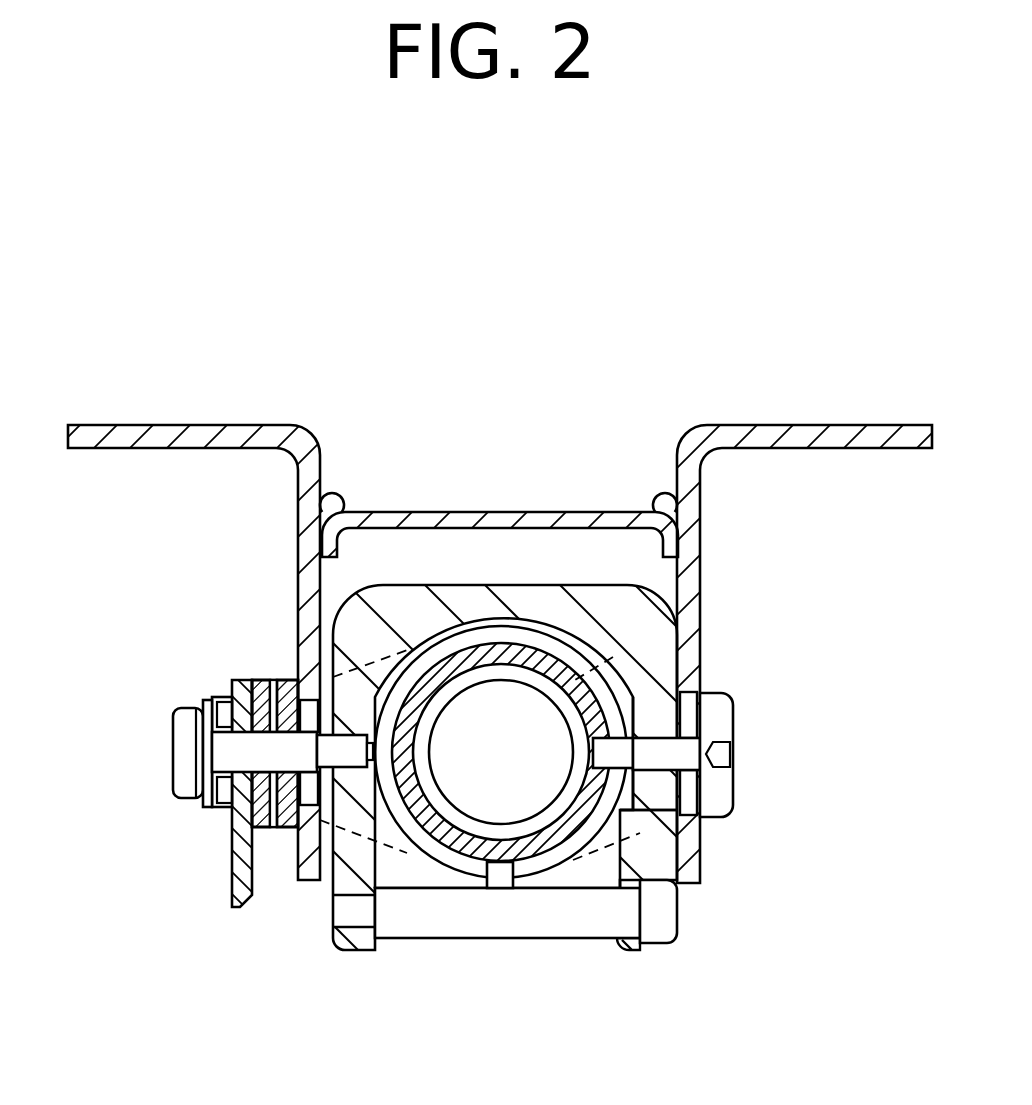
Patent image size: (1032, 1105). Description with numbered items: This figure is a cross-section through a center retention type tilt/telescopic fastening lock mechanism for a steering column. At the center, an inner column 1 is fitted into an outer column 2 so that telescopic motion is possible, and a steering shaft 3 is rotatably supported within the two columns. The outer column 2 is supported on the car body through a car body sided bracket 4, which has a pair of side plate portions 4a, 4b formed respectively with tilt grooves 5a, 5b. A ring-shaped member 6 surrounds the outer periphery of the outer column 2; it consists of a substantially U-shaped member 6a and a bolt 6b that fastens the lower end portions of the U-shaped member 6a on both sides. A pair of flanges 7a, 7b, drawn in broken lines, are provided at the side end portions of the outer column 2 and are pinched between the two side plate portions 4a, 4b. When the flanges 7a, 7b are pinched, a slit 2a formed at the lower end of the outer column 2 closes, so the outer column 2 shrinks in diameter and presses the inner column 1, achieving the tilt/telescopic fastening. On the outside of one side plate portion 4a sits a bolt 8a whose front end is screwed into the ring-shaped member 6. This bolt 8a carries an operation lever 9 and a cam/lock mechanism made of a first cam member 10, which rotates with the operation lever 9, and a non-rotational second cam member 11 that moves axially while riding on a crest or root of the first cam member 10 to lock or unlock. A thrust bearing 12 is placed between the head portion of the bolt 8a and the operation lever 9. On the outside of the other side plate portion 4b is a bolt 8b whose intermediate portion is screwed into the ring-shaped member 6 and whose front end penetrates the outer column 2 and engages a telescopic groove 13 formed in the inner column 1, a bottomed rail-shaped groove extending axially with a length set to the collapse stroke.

The inner column 1 is at (492, 663).
The outer column 2 is at (501, 719).
The slit 2a is at (492, 863).
The steering shaft 3 is at (470, 698).
The car body sided bracket 4 is at (516, 649).
The side plate portion 4a is at (298, 507).
The side plate portion 4b is at (700, 545).
The tilt groove 5a is at (298, 690).
The tilt groove 5b is at (720, 693).
The ring-shaped member 6 is at (505, 709).
The U-shaped member 6a is at (570, 584).
The bolt 6b is at (572, 940).
The flange 7a is at (412, 655).
The flange 7b is at (613, 657).
The bolt 8a is at (172, 742).
The bolt 8b is at (735, 716).
The operation lever 9 is at (232, 868).
The first cam member 10 is at (267, 850).
The second cam member 11 is at (277, 850).
The thrust bearing 12 is at (215, 812).
The telescopic groove 13 is at (640, 750).